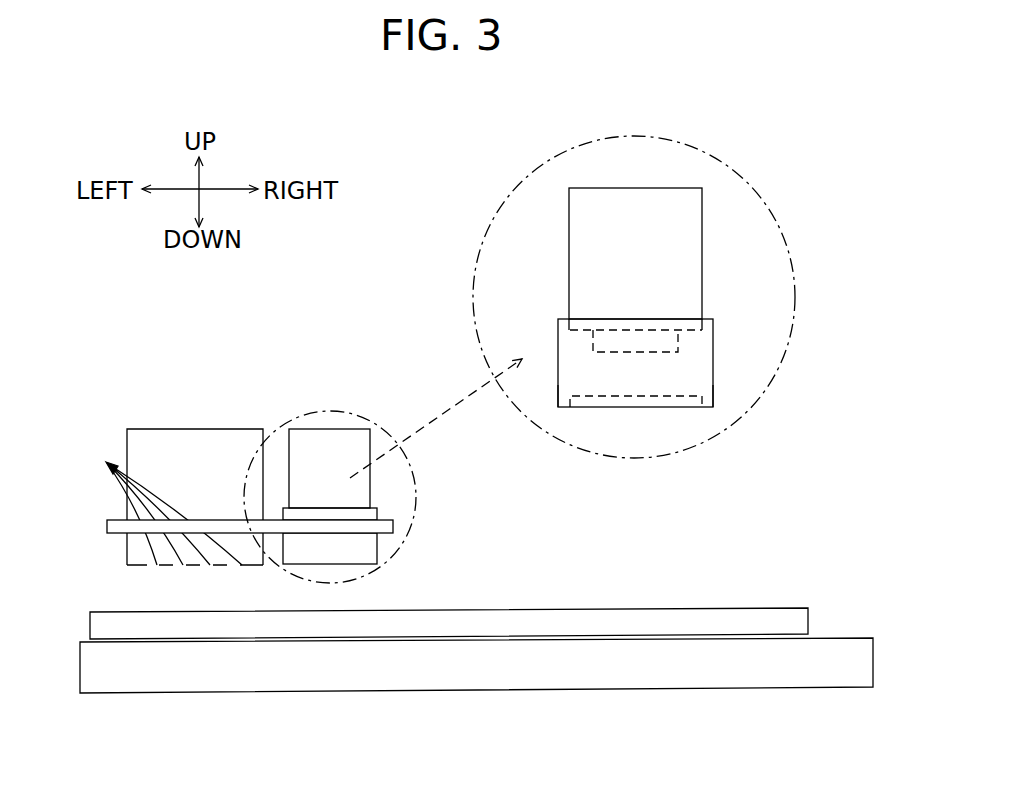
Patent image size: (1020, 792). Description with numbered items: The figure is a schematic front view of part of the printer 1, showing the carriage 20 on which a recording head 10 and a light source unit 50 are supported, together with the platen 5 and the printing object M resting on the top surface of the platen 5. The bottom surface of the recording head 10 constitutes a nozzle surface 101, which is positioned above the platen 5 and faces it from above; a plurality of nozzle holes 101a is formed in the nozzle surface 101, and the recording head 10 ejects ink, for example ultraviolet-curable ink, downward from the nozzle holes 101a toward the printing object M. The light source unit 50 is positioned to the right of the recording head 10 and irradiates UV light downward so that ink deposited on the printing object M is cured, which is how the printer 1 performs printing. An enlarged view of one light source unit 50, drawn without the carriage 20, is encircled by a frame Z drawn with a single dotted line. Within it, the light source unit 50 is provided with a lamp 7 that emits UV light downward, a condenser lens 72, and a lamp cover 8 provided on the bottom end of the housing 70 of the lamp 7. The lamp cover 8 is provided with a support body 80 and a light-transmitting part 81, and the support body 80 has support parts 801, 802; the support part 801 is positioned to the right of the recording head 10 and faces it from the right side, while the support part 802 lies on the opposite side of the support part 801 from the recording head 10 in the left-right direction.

The printer 1 is at (98, 371).
The recording head 10 is at (205, 443).
The nozzle surface 101 is at (136, 565).
The nozzle holes 101a is at (152, 501).
The carriage 20 is at (380, 525).
The light source unit 50 is at (357, 443).
The frame Z is at (490, 233).
The lamp 7 is at (641, 273).
The housing 70 is at (678, 273).
The condenser lens 72 is at (667, 343).
The lamp cover 8 is at (640, 391).
The support body 80 is at (678, 376).
The light-transmitting part 81 is at (643, 398).
The support part 801 is at (558, 386).
The support part 802 is at (713, 386).
The printing object M is at (718, 608).
The platen 5 is at (848, 662).